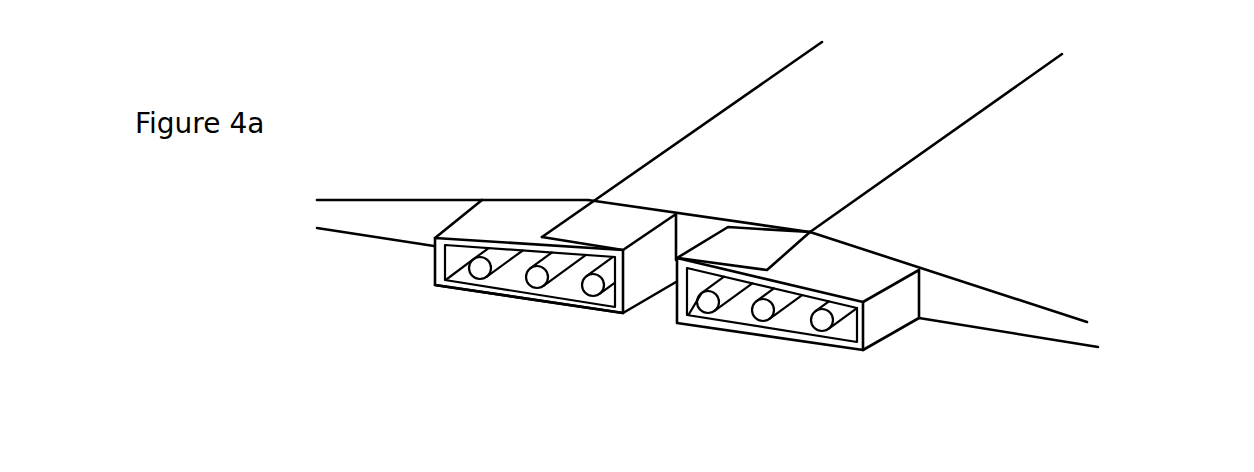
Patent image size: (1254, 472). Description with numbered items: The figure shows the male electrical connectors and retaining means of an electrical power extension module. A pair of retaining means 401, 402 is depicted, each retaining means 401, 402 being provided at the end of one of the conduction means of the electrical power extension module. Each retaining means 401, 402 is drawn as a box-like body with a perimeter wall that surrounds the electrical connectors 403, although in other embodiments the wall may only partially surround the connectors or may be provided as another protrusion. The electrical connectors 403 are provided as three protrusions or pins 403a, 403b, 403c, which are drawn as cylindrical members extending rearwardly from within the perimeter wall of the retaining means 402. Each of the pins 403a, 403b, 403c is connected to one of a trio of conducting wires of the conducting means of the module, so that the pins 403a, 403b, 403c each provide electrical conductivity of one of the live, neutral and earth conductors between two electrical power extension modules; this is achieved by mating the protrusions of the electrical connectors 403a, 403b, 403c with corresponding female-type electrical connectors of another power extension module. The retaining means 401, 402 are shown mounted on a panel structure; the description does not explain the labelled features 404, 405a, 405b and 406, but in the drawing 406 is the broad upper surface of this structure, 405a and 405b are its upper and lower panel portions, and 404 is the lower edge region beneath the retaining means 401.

The retaining means 401 is at (515, 222).
The retaining means 402 is at (853, 339).
The electrical connectors 403 is at (771, 364).
The protrusion or pin 403a is at (714, 316).
The protrusion or pin 403b is at (767, 322).
The protrusion or pin 403c is at (845, 350).
The lower base plate 404 is at (435, 282).
The upper panel 405a is at (540, 166).
The lower panel 405b is at (932, 234).
The top surface 406 is at (795, 153).